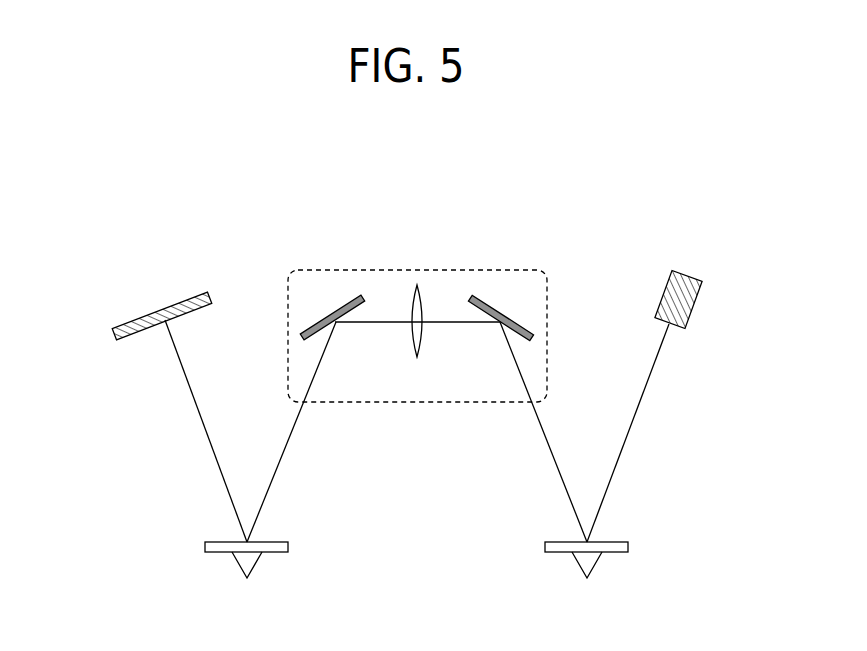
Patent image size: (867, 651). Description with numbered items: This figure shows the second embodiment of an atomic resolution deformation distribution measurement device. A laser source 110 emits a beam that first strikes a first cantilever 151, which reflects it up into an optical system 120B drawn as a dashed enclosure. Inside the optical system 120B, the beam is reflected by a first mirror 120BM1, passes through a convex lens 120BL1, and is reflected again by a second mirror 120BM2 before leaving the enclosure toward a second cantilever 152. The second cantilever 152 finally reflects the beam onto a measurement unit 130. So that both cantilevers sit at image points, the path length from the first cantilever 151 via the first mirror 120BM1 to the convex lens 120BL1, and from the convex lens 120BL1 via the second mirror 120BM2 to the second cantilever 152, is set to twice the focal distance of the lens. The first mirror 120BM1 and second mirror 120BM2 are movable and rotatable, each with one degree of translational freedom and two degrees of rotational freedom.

The laser source 110 is at (689, 268).
The measurement unit 130 is at (145, 318).
The first cantilever 151 is at (588, 560).
The second cantilever 152 is at (243, 560).
The optical system 120B is at (497, 268).
The first mirror 120BM1 is at (515, 319).
The second mirror 120BM2 is at (336, 314).
The convex lens 120BL1 is at (419, 303).